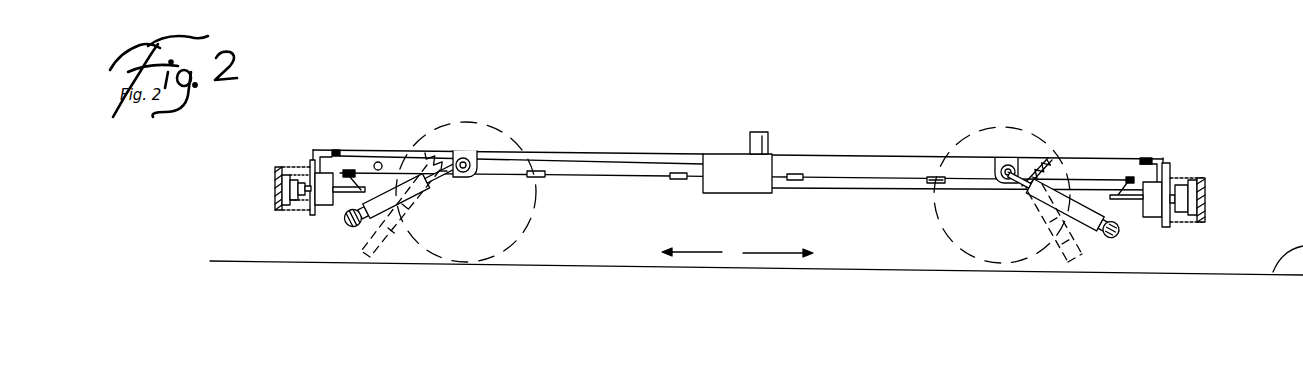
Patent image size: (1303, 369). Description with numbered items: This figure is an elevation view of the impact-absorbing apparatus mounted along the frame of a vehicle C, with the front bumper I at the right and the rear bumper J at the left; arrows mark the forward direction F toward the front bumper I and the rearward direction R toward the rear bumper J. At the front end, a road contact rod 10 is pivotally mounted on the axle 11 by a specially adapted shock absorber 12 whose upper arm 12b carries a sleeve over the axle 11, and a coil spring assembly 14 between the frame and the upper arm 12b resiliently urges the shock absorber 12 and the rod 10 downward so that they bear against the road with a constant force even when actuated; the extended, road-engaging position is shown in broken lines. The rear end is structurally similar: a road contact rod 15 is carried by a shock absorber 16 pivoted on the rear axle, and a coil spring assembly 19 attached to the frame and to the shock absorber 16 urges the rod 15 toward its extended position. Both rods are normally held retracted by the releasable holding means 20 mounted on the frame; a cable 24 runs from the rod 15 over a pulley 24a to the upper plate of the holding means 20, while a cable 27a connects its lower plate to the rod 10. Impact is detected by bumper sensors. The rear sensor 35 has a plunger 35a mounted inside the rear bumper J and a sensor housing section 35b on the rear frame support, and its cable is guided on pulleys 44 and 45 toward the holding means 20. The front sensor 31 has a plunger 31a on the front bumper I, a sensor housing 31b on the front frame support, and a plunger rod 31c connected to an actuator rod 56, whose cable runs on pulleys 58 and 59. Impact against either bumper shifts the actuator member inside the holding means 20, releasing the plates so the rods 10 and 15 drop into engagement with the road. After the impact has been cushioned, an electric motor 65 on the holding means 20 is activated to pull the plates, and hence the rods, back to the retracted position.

The road contact member or rod 10 is at (1118, 238).
The axle 11 is at (1010, 166).
The shock absorber 12 is at (1042, 210).
The upper arm 12b is at (1030, 187).
The coil spring assembly 14 is at (1050, 160).
The road contact member or rod 15 is at (345, 226).
The shock absorber 16 is at (398, 220).
The coil spring assembly 19 is at (436, 150).
The holding means 20 is at (703, 147).
The cable 24 is at (593, 160).
The pulley 24a is at (378, 161).
The cable 27a is at (812, 191).
The front sensor 31 is at (1170, 188).
The plunger 31a is at (1196, 206).
The sensor housing 31b is at (1150, 182).
The plunger rod 31c is at (1180, 185).
The rear sensor 35 is at (277, 198).
The plunger 35a is at (287, 167).
The sensor housing section 35b is at (330, 150).
The pulley 44 is at (676, 183).
The pulley 45 is at (536, 182).
The actuator rod 56 is at (1128, 176).
The pulley 58 is at (932, 177).
The pulley 59 is at (792, 184).
The electric motor 65 is at (760, 134).
The vehicle C is at (866, 156).
The rear bumper J is at (270, 187).
The front bumper I is at (1206, 193).
The rearward movement direction R is at (697, 252).
The forward movement direction F is at (780, 253).